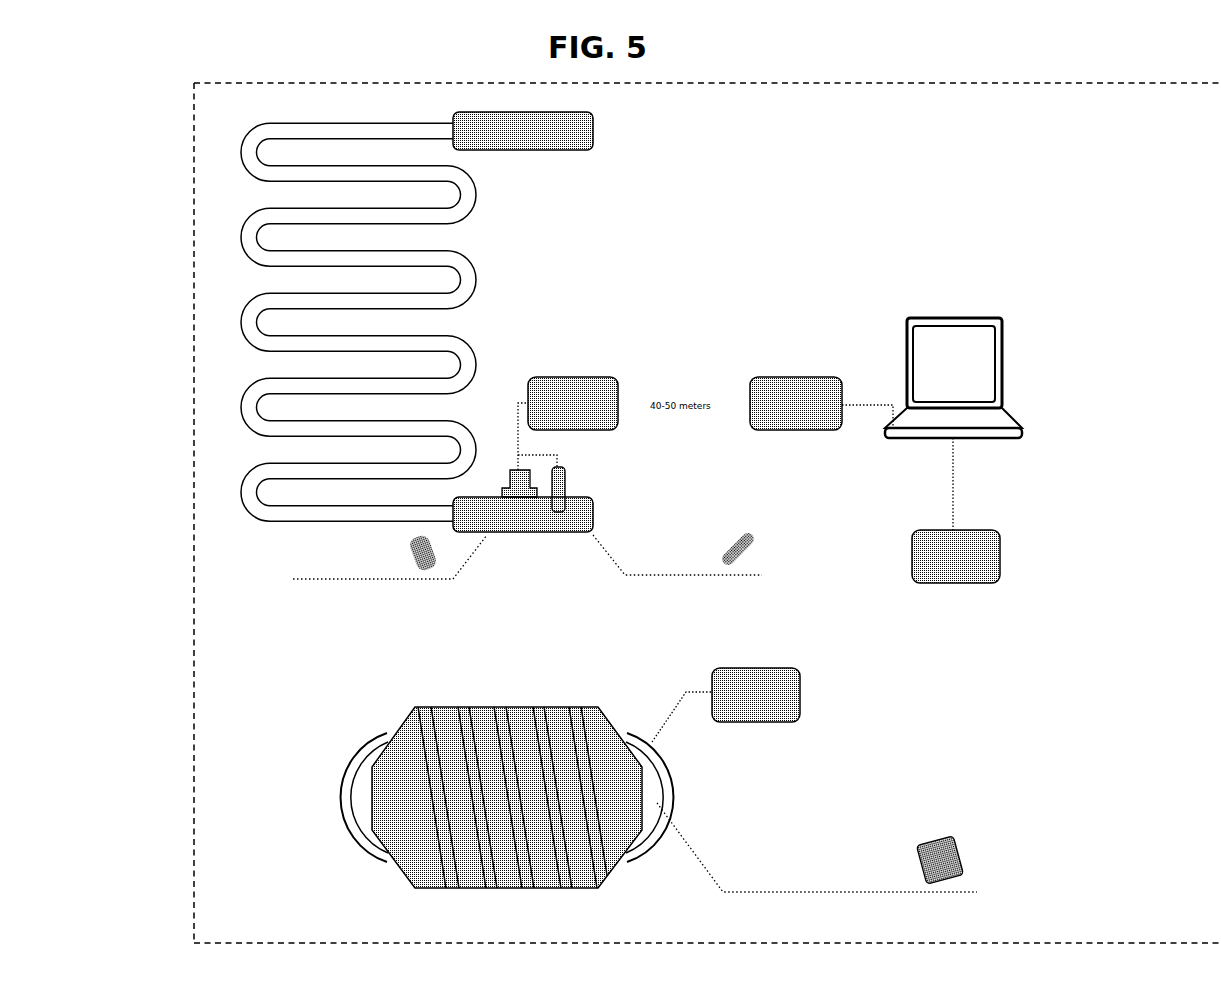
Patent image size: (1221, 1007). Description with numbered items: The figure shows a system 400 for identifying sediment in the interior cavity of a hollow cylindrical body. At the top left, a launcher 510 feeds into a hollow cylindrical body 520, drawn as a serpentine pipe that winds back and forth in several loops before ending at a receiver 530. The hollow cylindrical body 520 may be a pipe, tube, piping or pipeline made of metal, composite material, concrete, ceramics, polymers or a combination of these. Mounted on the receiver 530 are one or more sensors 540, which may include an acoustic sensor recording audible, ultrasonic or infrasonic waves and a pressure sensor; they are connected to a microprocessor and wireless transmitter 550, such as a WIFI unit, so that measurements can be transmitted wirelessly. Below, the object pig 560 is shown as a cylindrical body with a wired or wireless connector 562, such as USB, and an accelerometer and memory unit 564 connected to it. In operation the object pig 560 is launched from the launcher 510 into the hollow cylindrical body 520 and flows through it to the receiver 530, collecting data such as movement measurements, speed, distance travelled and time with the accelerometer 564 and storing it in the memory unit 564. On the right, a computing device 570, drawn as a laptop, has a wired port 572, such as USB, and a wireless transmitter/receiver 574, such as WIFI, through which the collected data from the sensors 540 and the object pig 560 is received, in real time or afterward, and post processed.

The pipeline inspection system 400 is at (192, 843).
The launcher 510 is at (593, 147).
The hollow cylindrical body 520 is at (468, 213).
The receiver 530 is at (595, 512).
The sensors 540 is at (510, 484).
The microprocessor and wireless transmitter 550 is at (580, 377).
The object pig 560 is at (607, 727).
The wired or wireless connector 562 is at (803, 706).
The accelerometer and/or memory unit 564 is at (962, 868).
The computing device 570 is at (993, 303).
The wired port 572 is at (950, 583).
The wireless transmitter/receiver 574 is at (829, 428).